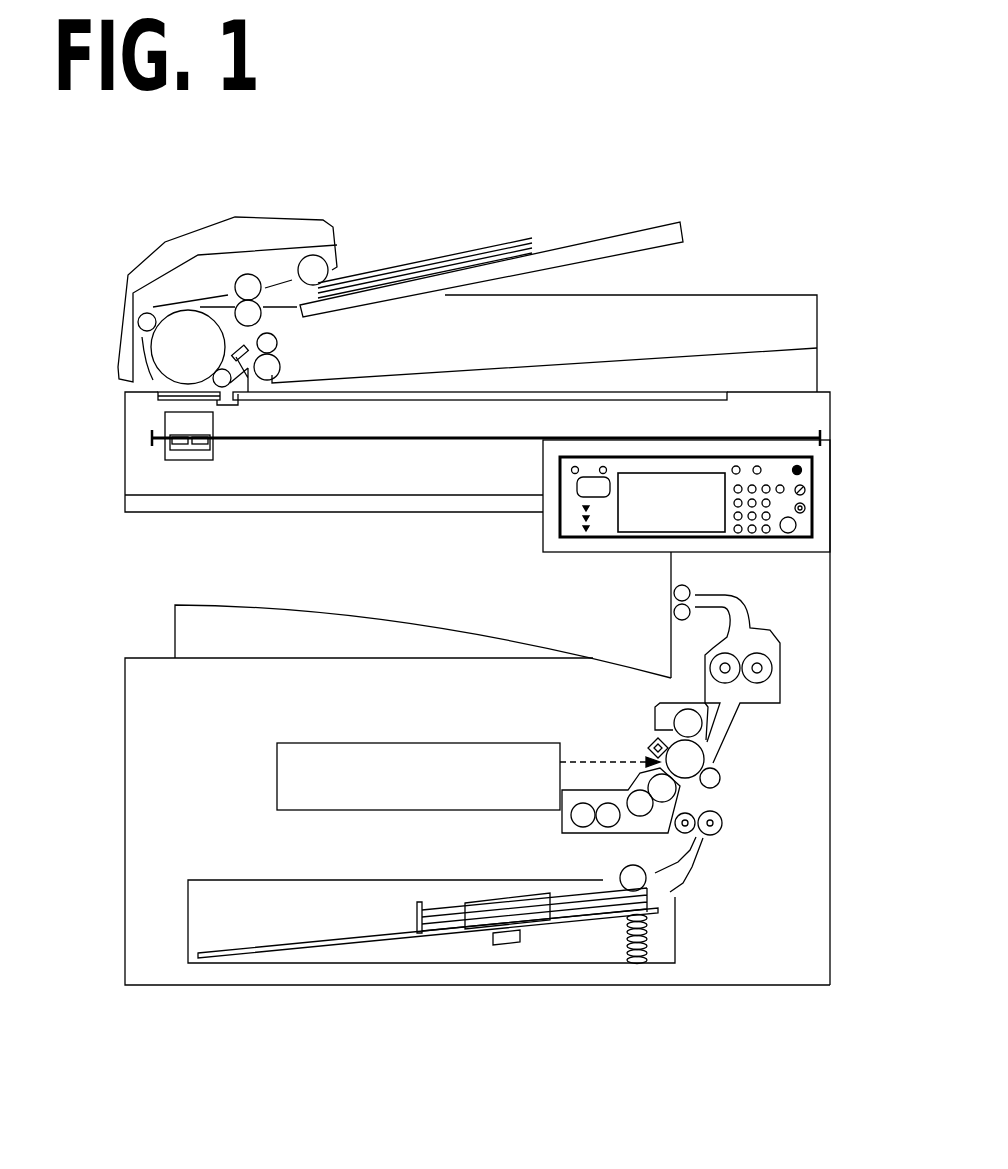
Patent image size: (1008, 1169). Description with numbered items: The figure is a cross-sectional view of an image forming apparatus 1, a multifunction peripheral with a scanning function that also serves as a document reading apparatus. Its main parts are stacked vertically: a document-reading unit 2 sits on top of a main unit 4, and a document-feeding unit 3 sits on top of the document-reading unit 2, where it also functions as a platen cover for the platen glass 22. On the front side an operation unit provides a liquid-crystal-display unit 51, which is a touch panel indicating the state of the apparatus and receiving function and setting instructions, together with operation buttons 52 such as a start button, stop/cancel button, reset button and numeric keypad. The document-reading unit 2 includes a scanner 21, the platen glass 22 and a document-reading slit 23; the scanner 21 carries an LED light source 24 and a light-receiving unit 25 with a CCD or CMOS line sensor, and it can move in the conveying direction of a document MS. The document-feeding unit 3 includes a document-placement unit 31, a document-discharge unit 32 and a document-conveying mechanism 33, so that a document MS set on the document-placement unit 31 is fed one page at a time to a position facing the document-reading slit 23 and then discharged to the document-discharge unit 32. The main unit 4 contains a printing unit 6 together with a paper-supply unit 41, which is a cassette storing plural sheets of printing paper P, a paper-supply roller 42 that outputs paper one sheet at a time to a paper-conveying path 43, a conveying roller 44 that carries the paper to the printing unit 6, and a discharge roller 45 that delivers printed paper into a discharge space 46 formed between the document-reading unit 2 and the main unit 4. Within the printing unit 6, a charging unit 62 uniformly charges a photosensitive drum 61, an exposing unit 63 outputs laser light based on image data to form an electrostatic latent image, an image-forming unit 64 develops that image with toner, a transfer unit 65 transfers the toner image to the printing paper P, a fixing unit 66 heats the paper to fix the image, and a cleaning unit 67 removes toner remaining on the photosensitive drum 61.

The image forming apparatus 1 is at (484, 51).
The document-reading unit 2 is at (98, 443).
The document-feeding unit 3 is at (97, 314).
The main unit 4 is at (97, 729).
The printing unit 6 is at (553, 719).
The scanner 21 is at (205, 460).
The platen glass 22 is at (455, 400).
The document-reading slit 23 is at (168, 397).
The light source 24 is at (173, 437).
The light-receiving unit 25 is at (207, 436).
The document-placement unit 31 is at (650, 227).
The document-discharge unit 32 is at (562, 362).
The document-conveying mechanism 33 is at (263, 215).
The paper-supply unit 41 is at (675, 920).
The paper-supply roller 42 is at (628, 876).
The paper-conveying path 43 is at (700, 860).
The conveying roller 44 is at (724, 823).
The discharge roller 45 is at (676, 588).
The discharge space 46 is at (397, 620).
The liquid-crystal-display unit 51 is at (707, 486).
The operation buttons 52 is at (773, 497).
The photosensitive drum 61 is at (697, 757).
The charging unit 62 is at (650, 743).
The exposing unit 63 is at (320, 786).
The image-forming unit 64 is at (570, 822).
The transfer unit 65 is at (722, 779).
The fixing unit 66 is at (703, 666).
The cleaning unit 67 is at (657, 706).
The printing paper P is at (455, 905).
The document MS is at (442, 256).